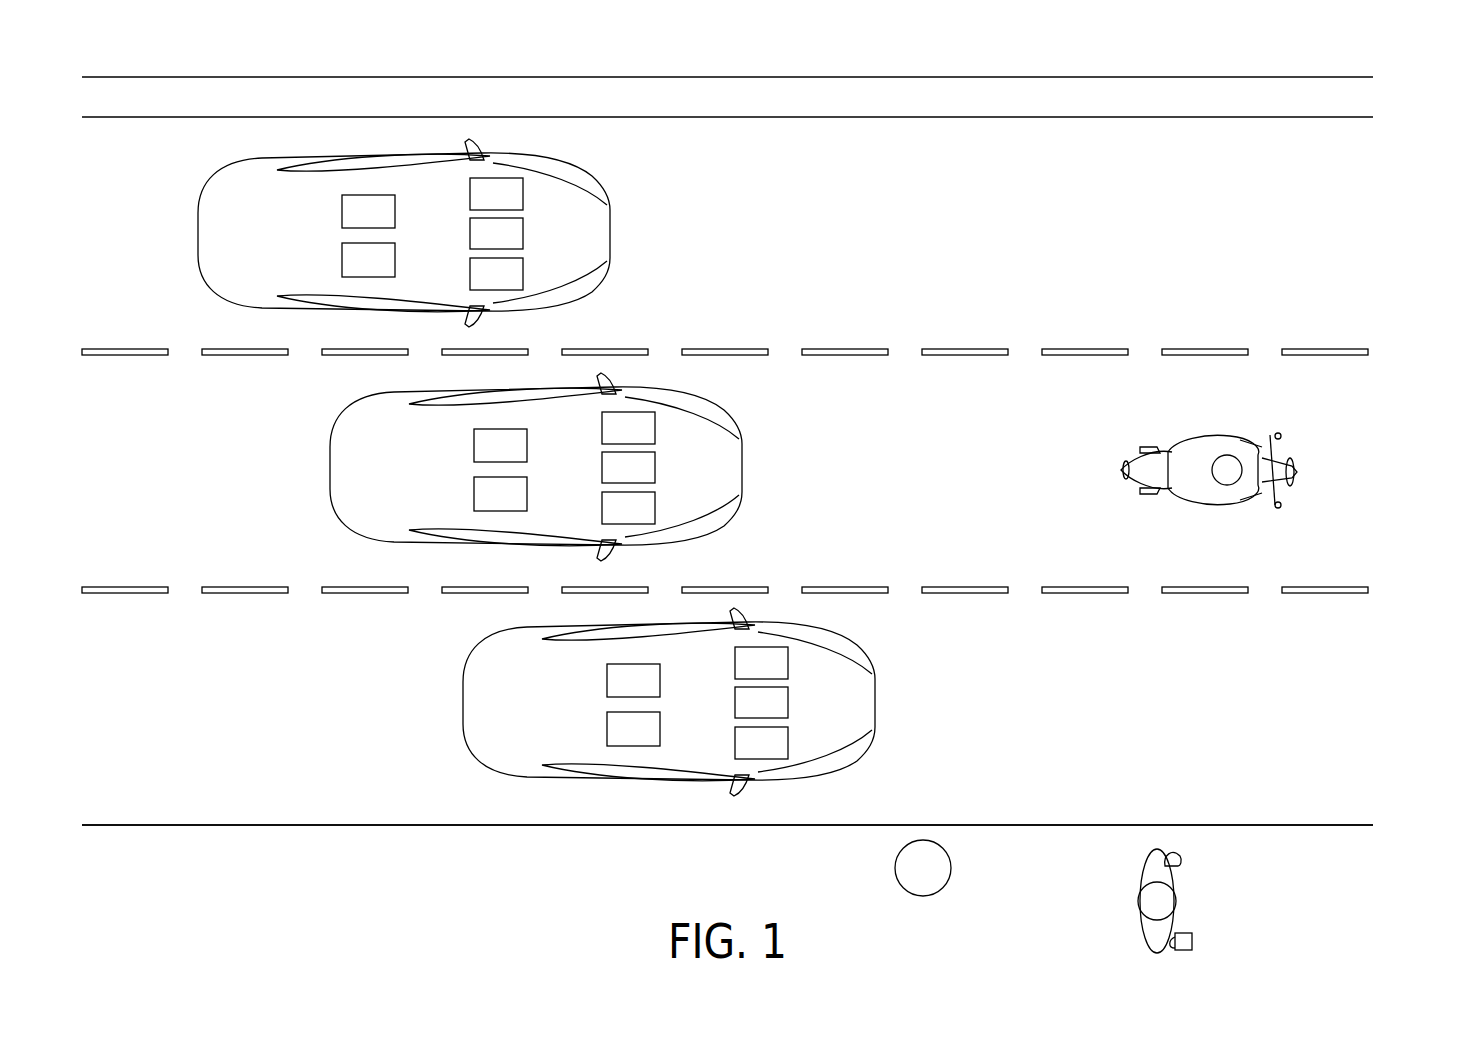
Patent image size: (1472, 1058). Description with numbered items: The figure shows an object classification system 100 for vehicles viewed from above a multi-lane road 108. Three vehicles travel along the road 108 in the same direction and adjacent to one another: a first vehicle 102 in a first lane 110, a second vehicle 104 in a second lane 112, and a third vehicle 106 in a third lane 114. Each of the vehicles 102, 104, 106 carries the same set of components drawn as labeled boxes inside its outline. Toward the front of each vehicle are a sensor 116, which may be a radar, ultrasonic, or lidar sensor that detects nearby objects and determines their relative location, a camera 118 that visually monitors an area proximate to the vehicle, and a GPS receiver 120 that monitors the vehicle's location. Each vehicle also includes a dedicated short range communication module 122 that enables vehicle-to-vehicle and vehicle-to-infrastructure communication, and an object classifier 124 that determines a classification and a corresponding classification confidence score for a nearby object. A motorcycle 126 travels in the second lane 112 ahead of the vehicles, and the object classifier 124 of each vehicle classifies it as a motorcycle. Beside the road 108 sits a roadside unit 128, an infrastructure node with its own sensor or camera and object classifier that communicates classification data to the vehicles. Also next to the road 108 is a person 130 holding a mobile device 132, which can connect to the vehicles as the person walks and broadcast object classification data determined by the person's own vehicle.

The object classification system 100 is at (1405, 101).
The vehicle 102 is at (198, 233).
The vehicle 104 is at (330, 467).
The vehicle 106 is at (463, 702).
The road 108 is at (1390, 816).
The lane 110 is at (146, 327).
The lane 112 is at (146, 559).
The lane 114 is at (146, 794).
The sensor 116 is at (516, 206).
The camera 118 is at (516, 245).
The global positioning sensor (GPS) receiver 120 is at (516, 286).
The dedicated short range communication (DSRC) module 122 is at (388, 223).
The object classifier 124 is at (388, 272).
The motorcycle 126 is at (1156, 495).
The roadside unit 128 is at (942, 880).
The person 130 is at (1180, 860).
The mobile device 132 is at (1192, 940).